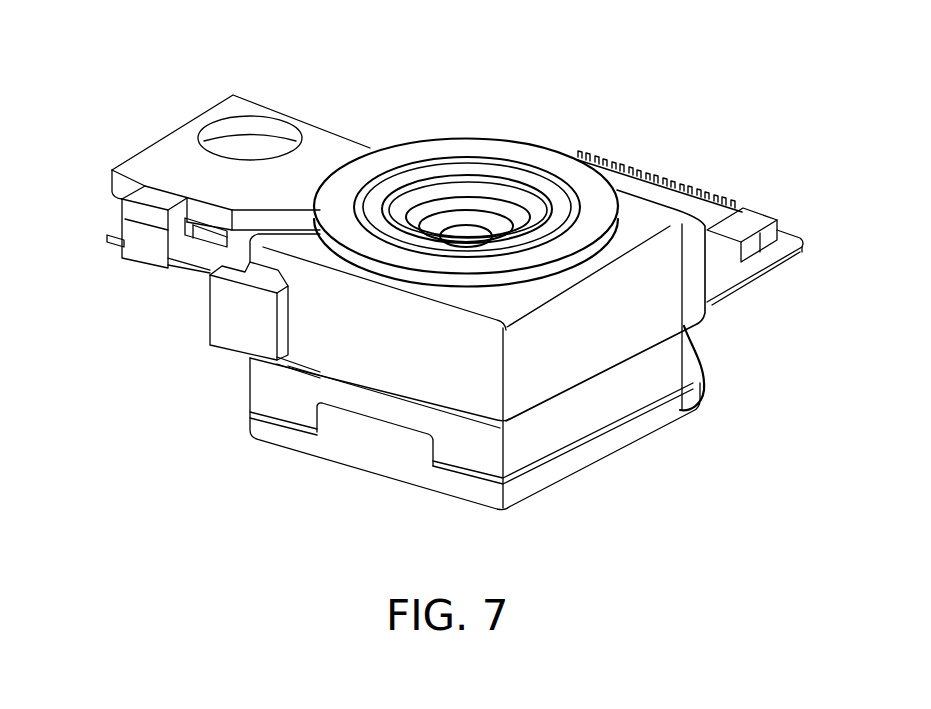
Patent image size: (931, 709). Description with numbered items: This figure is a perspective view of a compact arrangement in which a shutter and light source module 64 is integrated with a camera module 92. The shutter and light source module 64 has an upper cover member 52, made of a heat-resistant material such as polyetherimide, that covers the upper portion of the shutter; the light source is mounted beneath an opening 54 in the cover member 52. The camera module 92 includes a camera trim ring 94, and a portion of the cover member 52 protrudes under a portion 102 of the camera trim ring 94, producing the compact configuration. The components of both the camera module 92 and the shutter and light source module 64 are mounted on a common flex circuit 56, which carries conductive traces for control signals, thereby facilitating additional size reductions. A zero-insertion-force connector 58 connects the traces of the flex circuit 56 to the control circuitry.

The shutter cover member 52 is at (332, 144).
The opening 54 is at (228, 128).
The flex circuit 56 is at (117, 240).
The zero-insertion-force connector 58 is at (745, 205).
The shutter and light source module 64 is at (415, 101).
The camera module 92 is at (803, 193).
The camera trim ring 94 is at (452, 148).
The portion of camera trim ring 102 is at (330, 205).